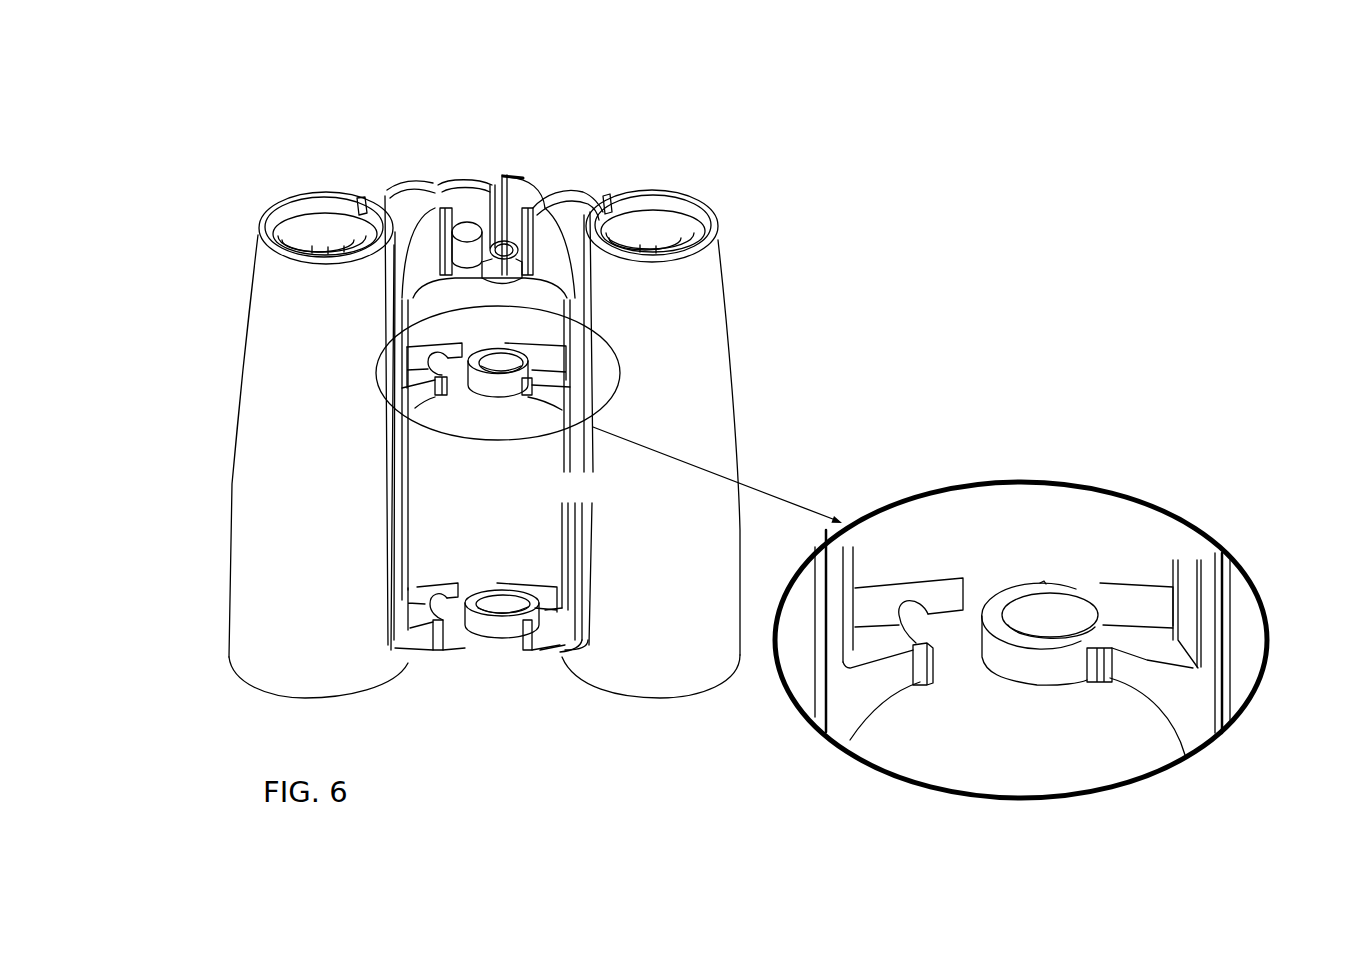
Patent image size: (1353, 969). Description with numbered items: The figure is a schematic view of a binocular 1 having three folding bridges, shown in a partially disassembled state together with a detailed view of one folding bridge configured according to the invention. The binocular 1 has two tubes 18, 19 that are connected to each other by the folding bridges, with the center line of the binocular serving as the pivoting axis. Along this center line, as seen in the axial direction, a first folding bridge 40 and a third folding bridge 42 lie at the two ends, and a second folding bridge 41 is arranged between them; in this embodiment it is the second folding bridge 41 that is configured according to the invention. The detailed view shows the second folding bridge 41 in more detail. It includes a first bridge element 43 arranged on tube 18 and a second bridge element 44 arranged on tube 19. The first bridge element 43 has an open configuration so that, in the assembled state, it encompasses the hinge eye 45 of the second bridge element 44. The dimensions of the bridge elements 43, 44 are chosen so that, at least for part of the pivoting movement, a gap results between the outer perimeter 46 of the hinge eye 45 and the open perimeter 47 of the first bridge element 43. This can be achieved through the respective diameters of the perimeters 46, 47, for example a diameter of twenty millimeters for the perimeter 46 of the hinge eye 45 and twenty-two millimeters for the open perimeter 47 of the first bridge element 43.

The binocular 1 is at (704, 156).
The tube 18 is at (295, 552).
The tube 19 is at (697, 273).
The first folding bridge 40 is at (455, 175).
The second folding bridge 41 is at (368, 322).
The third folding bridge 42 is at (471, 672).
The first bridge element 43 is at (878, 607).
The second bridge element 44 is at (1125, 603).
The hinge eye 45 is at (1057, 593).
The outer perimeter 46 is at (1029, 672).
The open perimeter 47 is at (933, 588).